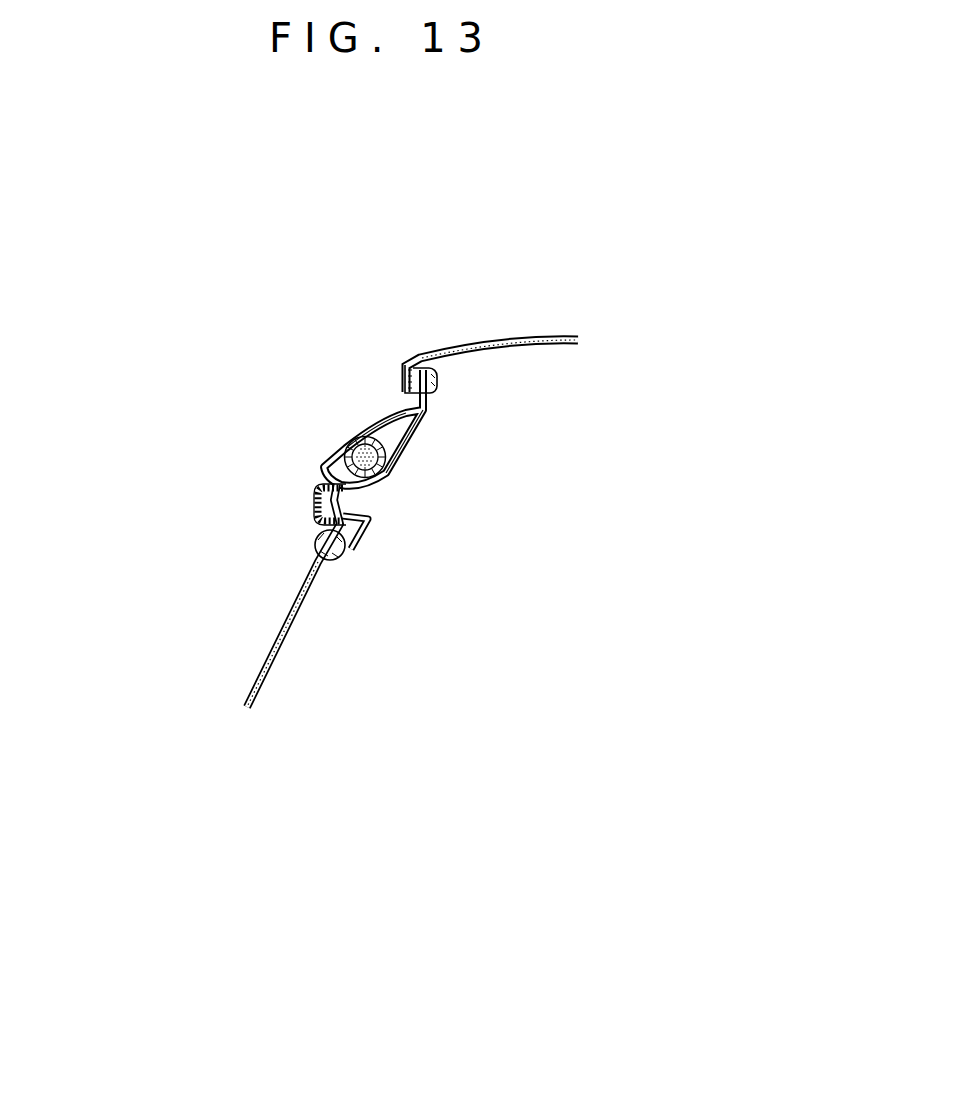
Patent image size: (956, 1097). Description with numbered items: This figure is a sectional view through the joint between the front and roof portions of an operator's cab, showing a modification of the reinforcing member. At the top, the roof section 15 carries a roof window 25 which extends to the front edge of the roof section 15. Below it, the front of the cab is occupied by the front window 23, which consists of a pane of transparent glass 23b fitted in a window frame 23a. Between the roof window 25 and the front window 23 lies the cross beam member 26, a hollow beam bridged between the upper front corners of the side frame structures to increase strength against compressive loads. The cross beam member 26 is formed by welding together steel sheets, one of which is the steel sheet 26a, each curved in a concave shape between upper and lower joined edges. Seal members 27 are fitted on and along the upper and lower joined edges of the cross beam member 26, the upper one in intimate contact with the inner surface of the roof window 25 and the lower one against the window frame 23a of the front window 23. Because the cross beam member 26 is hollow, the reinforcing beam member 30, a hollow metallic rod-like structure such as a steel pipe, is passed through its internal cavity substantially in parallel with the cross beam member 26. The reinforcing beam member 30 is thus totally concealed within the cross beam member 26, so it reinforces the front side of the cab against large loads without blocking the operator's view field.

The roof section 15 is at (541, 332).
The roof window 25 is at (462, 348).
The cross beam member 26 is at (424, 446).
The steel sheet 26a is at (383, 412).
The seal member 27 is at (438, 387).
The reinforcing beam member 30 is at (335, 448).
The front window 23 is at (270, 684).
The window frame 23a is at (364, 538).
The pane of transparent glass 23b is at (280, 628).